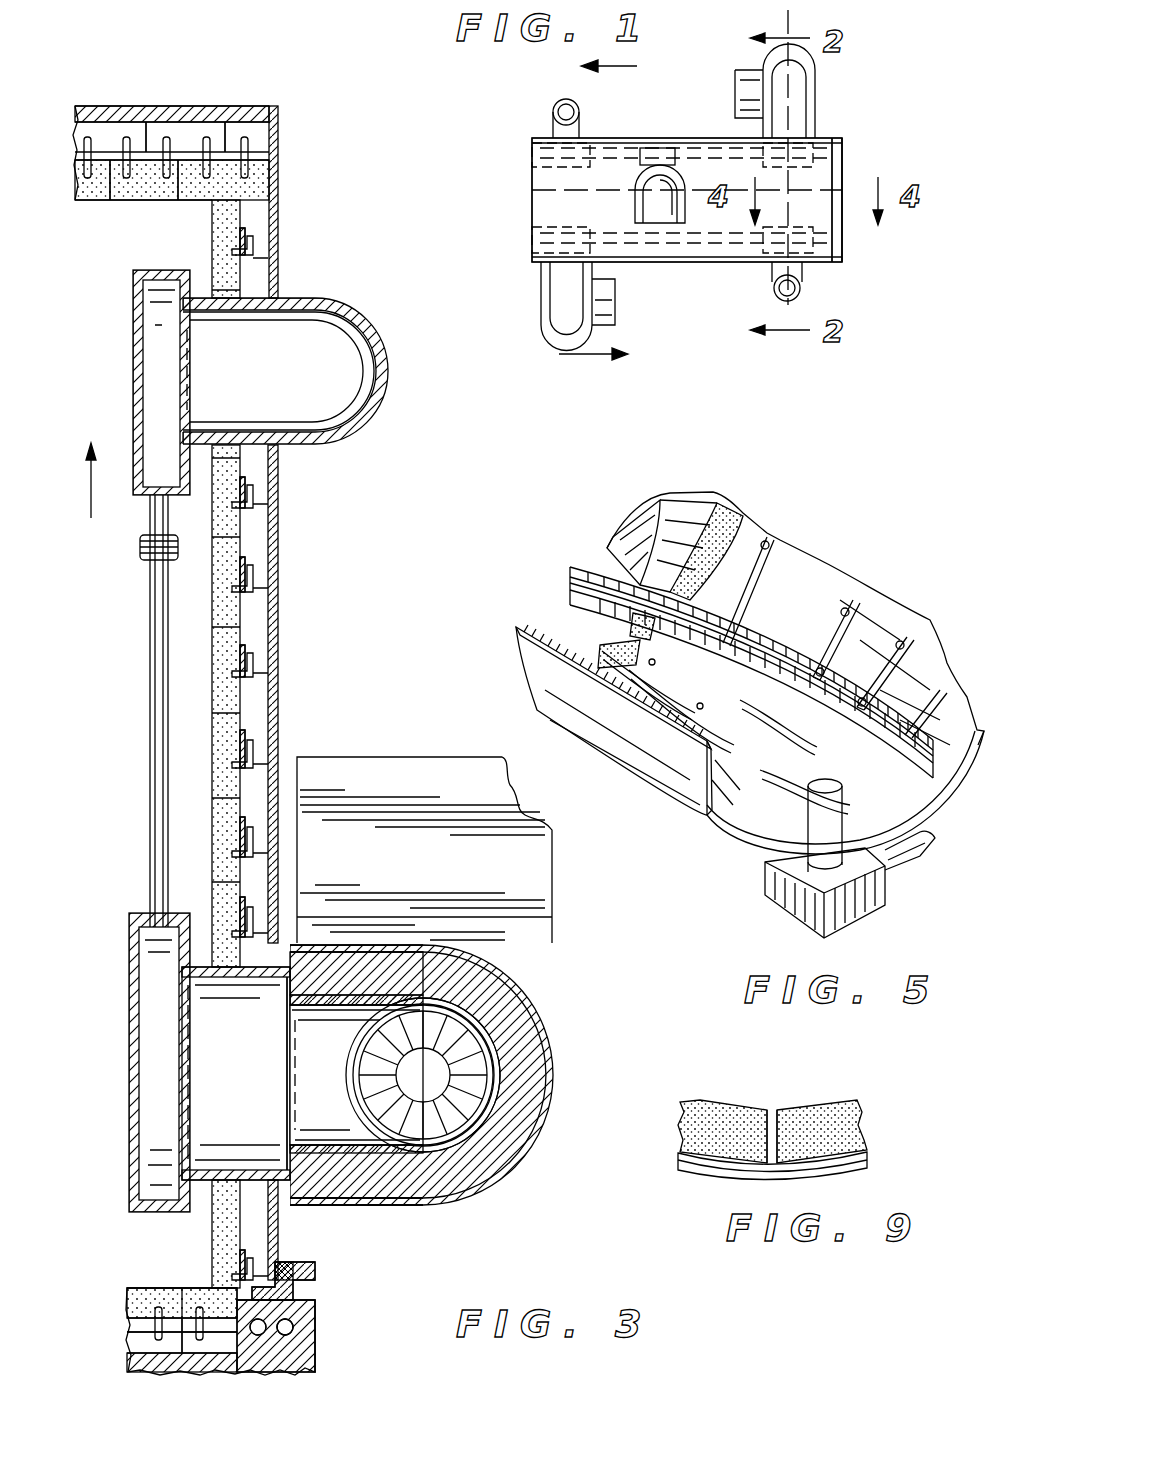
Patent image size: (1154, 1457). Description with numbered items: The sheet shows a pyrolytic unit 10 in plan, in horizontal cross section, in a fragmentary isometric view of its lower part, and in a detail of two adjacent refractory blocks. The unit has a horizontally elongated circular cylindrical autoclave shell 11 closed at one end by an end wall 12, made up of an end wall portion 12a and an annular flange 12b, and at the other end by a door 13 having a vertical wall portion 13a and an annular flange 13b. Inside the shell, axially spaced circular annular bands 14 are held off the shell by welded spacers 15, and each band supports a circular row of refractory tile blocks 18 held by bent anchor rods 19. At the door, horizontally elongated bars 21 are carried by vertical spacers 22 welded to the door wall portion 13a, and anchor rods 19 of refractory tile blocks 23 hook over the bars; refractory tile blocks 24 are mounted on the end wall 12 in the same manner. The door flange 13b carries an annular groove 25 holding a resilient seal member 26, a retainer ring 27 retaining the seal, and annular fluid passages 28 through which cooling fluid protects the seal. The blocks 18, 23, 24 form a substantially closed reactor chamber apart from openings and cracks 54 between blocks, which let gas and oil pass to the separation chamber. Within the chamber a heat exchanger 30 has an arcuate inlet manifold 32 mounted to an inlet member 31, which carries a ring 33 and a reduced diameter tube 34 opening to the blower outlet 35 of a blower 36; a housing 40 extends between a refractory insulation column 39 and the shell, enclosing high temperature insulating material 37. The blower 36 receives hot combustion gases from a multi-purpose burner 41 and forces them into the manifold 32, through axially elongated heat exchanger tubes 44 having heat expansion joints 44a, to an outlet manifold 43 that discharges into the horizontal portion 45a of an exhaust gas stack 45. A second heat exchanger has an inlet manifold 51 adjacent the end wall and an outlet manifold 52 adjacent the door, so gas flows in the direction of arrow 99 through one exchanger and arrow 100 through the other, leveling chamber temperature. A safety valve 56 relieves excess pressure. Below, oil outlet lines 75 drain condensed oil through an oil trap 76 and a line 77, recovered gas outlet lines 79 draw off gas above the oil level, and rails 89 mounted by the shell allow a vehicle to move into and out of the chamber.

In FIG. 3, the pyrolytic unit 10 is at (280, 672).
In FIG. 1, the pyrolytic unit 10 is at (532, 181).
In FIG. 5, the pyrolytic unit 10 is at (769, 684).
In FIG. 3, the autoclave shell 11 is at (278, 262).
In FIG. 5, the autoclave shell 11 is at (935, 670).
In FIG. 3, the end wall 12 is at (122, 100).
In FIG. 1, the end wall 12 is at (532, 208).
In FIG. 3, the end wall portion 12a is at (207, 108).
In FIG. 3, the annular flange of end wall 12b is at (278, 165).
In FIG. 1, the door 13 is at (842, 165).
In FIG. 3, the vertical wall portion of door 13a is at (190, 1368).
In FIG. 3, the annular flange of door 13b is at (295, 1325).
In FIG. 3, the circular annular bands 14 is at (230, 565).
In FIG. 5, the circular annular bands 14 is at (890, 632).
In FIG. 9, the circular annular bands 14 is at (840, 1172).
In FIG. 3, the spacers (gussets) 15 is at (258, 578).
In FIG. 5, the spacers (gussets) 15 is at (830, 590).
In FIG. 3, the refractory tile blocks 18 is at (225, 605).
In FIG. 5, the refractory tile blocks 18 is at (745, 510).
In FIG. 9, the refractory tile blocks 18 is at (710, 1128).
In FIG. 3, the anchor rod 19 is at (250, 135).
In FIG. 3, the horizontally elongated bars 21 is at (170, 150).
In FIG. 3, the vertical spacers 22 is at (146, 122).
In FIG. 3, the refractory tile blocks on door 23 is at (128, 1300).
In FIG. 3, the refractory tile blocks on end wall 24 is at (130, 185).
In FIG. 3, the annular groove 25 is at (312, 1302).
In FIG. 3, the seal member 26 is at (288, 1265).
In FIG. 3, the retainer ring 27 is at (300, 1278).
In FIG. 3, the annular fluid passages 28 is at (288, 1338).
In FIG. 3, the heat exchanger 30 is at (148, 765).
In FIG. 3, the inlet member 31 is at (240, 978).
In FIG. 3, the inlet manifold 32 is at (129, 1062).
In FIG. 1, the inlet manifold 32 is at (833, 143).
In FIG. 3, the ring 33 is at (283, 985).
In FIG. 3, the tube 34 is at (352, 1003).
In FIG. 3, the blower outlet 35 is at (500, 1090).
In FIG. 3, the blower 36 is at (540, 978).
In FIG. 3, the high temperature insulating material 37 is at (398, 1200).
In FIG. 3, the refractory insulation column 39 is at (542, 1060).
In FIG. 3, the housing 40 is at (345, 945).
In FIG. 3, the multi-purpose burner 41 is at (365, 757).
In FIG. 1, the multi-purpose burner 41 is at (742, 85).
In FIG. 3, the outlet (exhaust) manifold 43 is at (133, 290).
In FIG. 3, the heat exchanger tubes 44 is at (150, 680).
In FIG. 3, the heat expansion joint 44a is at (140, 548).
In FIG. 3, the exhaust gas stack 45 is at (370, 400).
In FIG. 1, the exhaust gas stack 45 is at (553, 108).
In FIG. 3, the horizontal portion of exhaust gas stack 45a is at (245, 300).
In FIG. 1, the inlet manifold of second heat exchanger 51 is at (535, 240).
In FIG. 1, the outlet manifold of second heat exchanger 52 is at (815, 243).
In FIG. 9, the cracks 54 is at (785, 1125).
In FIG. 1, the safety valve 56 is at (660, 190).
In FIG. 5, the oil outlet lines 75 is at (785, 892).
In FIG. 5, the oil trap 76 is at (775, 872).
In FIG. 5, the line 77 is at (905, 858).
In FIG. 5, the recovered gas outlet lines 79 is at (785, 548).
In FIG. 5, the rails 89 is at (720, 800).
In FIG. 3, the arrow 99 is at (91, 518).
In FIG. 1, the arrow 99 is at (640, 70).
In FIG. 1, the arrow 100 is at (580, 358).